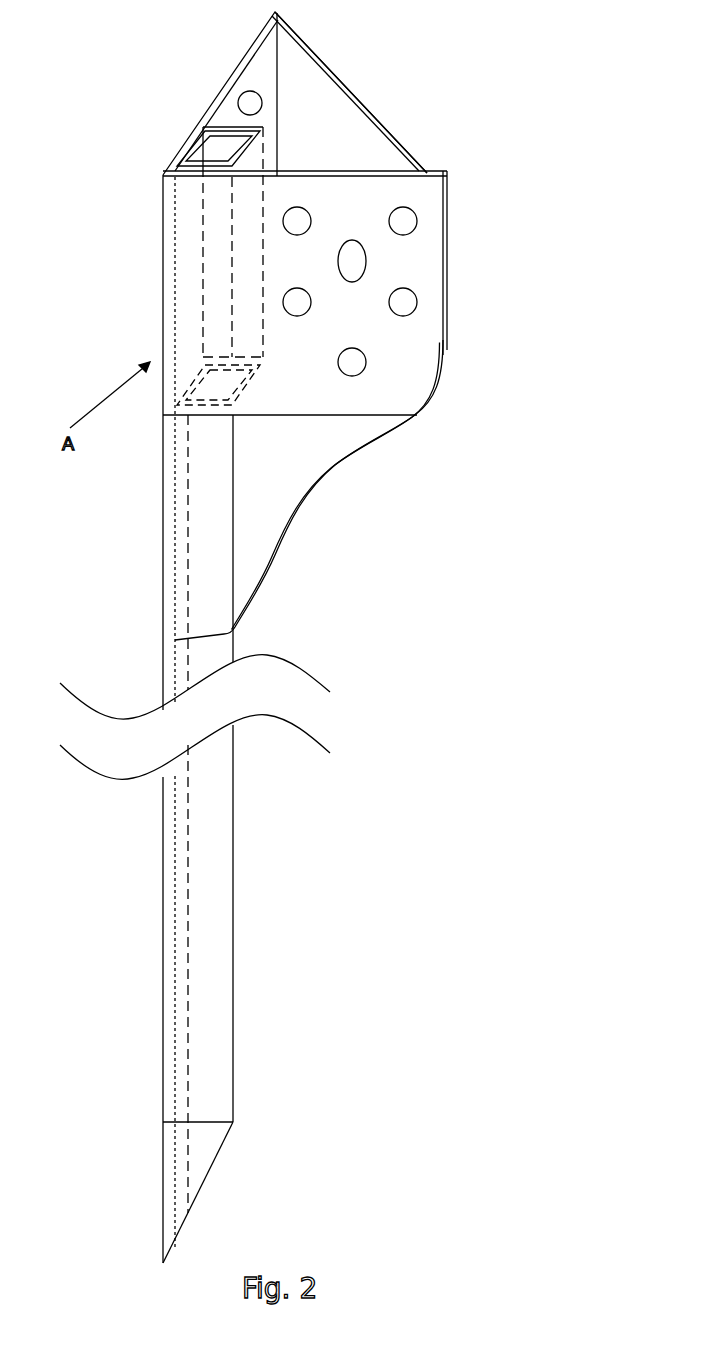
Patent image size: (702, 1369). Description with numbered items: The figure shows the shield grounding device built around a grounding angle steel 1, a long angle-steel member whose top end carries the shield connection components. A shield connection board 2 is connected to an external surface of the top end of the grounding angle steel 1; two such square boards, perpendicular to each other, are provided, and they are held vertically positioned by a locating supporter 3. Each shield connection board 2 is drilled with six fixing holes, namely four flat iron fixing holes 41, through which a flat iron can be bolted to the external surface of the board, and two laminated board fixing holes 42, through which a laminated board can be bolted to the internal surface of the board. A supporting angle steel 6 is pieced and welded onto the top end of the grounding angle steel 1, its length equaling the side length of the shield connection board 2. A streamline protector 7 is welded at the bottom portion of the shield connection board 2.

The grounding angle steel 1 is at (190, 153).
The shield connection board 2 is at (220, 90).
The locating supporter 3 is at (340, 97).
The supporting angle steel 6 is at (257, 143).
The streamline protector 7 is at (257, 478).
The flat iron fixing holes 41 is at (297, 302).
The laminated board fixing holes 42 is at (352, 362).